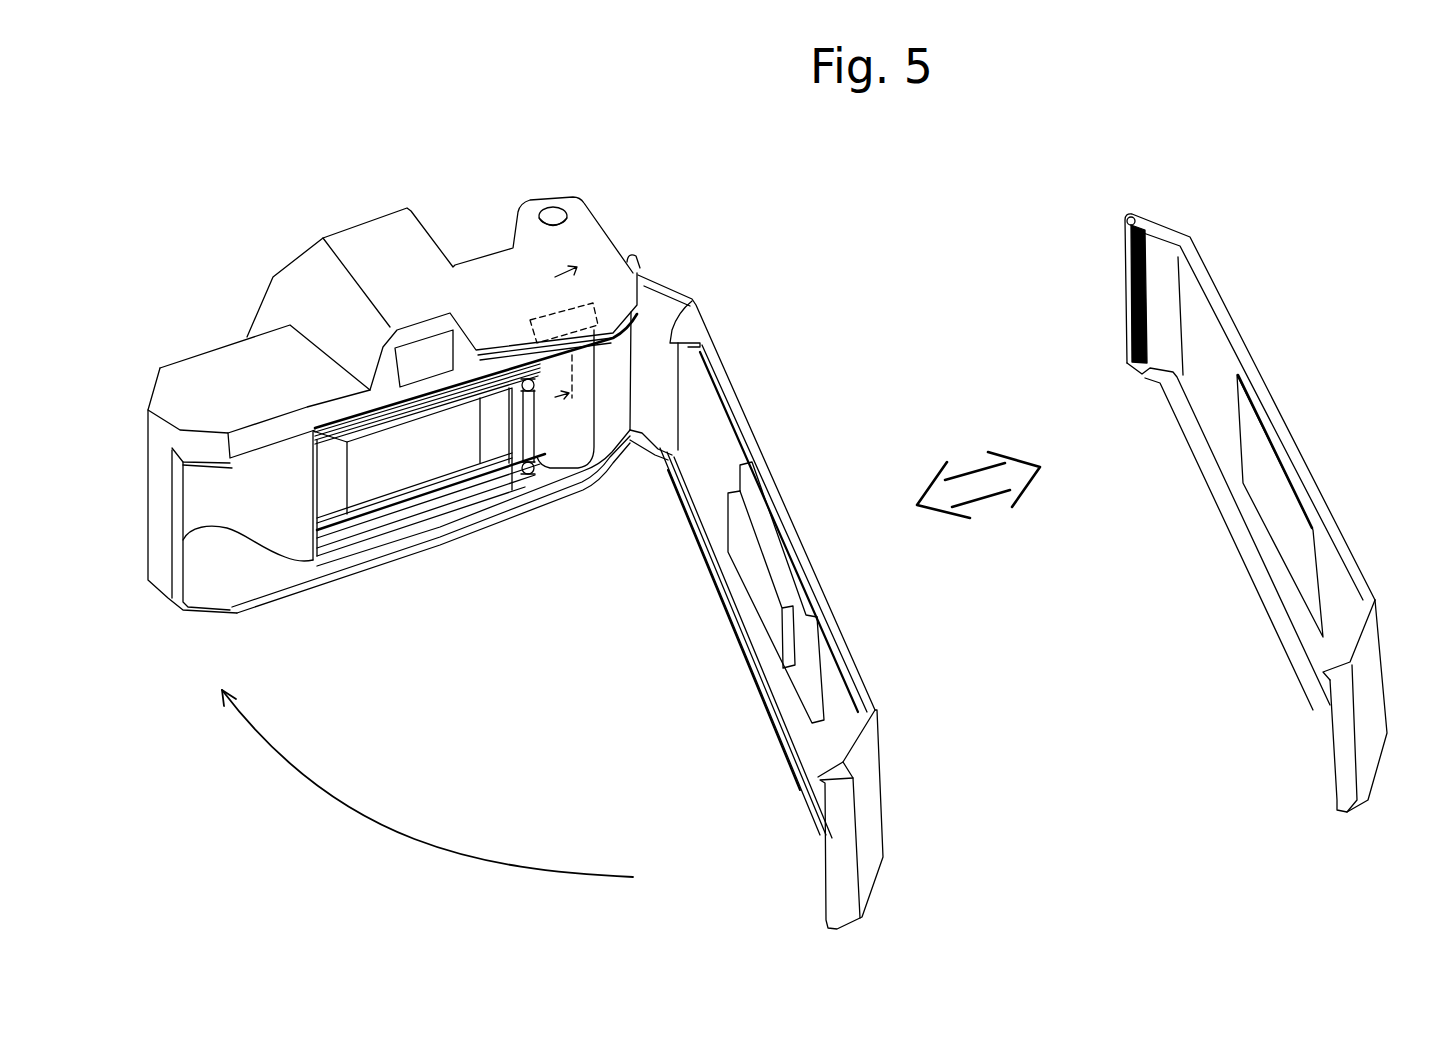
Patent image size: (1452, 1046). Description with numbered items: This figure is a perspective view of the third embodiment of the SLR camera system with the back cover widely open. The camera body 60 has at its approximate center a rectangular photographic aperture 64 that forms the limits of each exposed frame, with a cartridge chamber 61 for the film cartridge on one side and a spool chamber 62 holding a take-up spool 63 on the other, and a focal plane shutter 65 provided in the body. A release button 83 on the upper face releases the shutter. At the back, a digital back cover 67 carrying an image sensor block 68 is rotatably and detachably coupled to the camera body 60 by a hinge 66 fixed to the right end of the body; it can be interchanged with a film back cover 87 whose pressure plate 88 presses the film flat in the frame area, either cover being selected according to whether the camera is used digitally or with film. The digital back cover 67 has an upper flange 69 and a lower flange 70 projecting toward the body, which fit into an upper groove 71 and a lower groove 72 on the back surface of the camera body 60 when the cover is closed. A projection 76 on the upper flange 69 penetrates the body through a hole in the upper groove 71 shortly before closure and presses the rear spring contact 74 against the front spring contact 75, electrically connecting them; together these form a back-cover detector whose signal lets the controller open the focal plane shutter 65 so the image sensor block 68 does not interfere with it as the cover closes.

The camera body 60 is at (208, 367).
The cartridge chamber 61 is at (220, 577).
The spool chamber 62 is at (583, 470).
The take-up spool 63 is at (547, 447).
The photographic aperture 64 is at (400, 468).
The focal plane shutter 65 is at (427, 472).
The hinge 66 is at (630, 252).
The digital back cover 67 is at (857, 647).
The image sensor block 68 is at (748, 570).
The upper flange 69 is at (747, 430).
The lower flange 70 is at (700, 542).
The upper groove 71 is at (270, 450).
The lower groove 72 is at (312, 577).
The rear spring contact 74 is at (490, 227).
The front spring contact 75 is at (507, 257).
The projection 76 is at (683, 311).
The release button 83 is at (553, 207).
The film back cover 87 is at (1349, 514).
The pressure plate 88 is at (1277, 513).